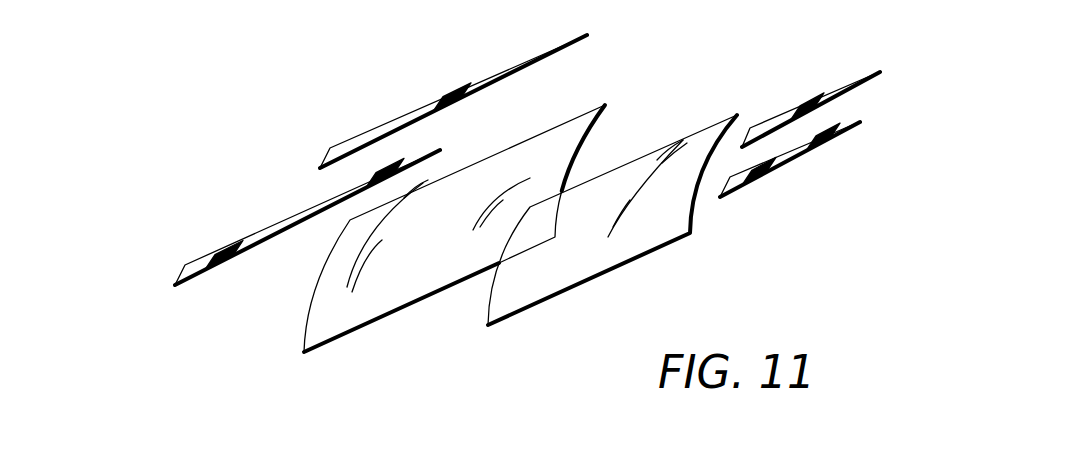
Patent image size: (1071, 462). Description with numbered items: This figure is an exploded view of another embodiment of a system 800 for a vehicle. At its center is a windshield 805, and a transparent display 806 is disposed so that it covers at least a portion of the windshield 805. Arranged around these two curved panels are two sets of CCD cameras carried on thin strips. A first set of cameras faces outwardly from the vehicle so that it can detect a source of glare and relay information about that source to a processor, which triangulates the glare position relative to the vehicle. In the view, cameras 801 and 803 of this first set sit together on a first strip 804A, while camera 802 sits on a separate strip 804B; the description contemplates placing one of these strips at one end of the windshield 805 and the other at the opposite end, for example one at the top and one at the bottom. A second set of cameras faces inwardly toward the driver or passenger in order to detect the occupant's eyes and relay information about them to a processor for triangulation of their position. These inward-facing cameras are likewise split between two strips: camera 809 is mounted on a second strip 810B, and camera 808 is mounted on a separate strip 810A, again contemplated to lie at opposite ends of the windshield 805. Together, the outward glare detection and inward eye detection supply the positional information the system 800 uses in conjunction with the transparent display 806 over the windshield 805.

The system 800 is at (196, 146).
The CCD camera 801 is at (228, 243).
The CCD camera 802 is at (452, 92).
The CCD camera 803 is at (388, 178).
The first strip 804A is at (185, 272).
The separate strip 804B is at (580, 43).
The windshield 805 is at (370, 313).
The transparent display 806 is at (603, 263).
The CCD camera 808 is at (755, 190).
The CCD camera 809 is at (822, 150).
The separate strip 810A is at (873, 82).
The second strip 810B is at (855, 128).